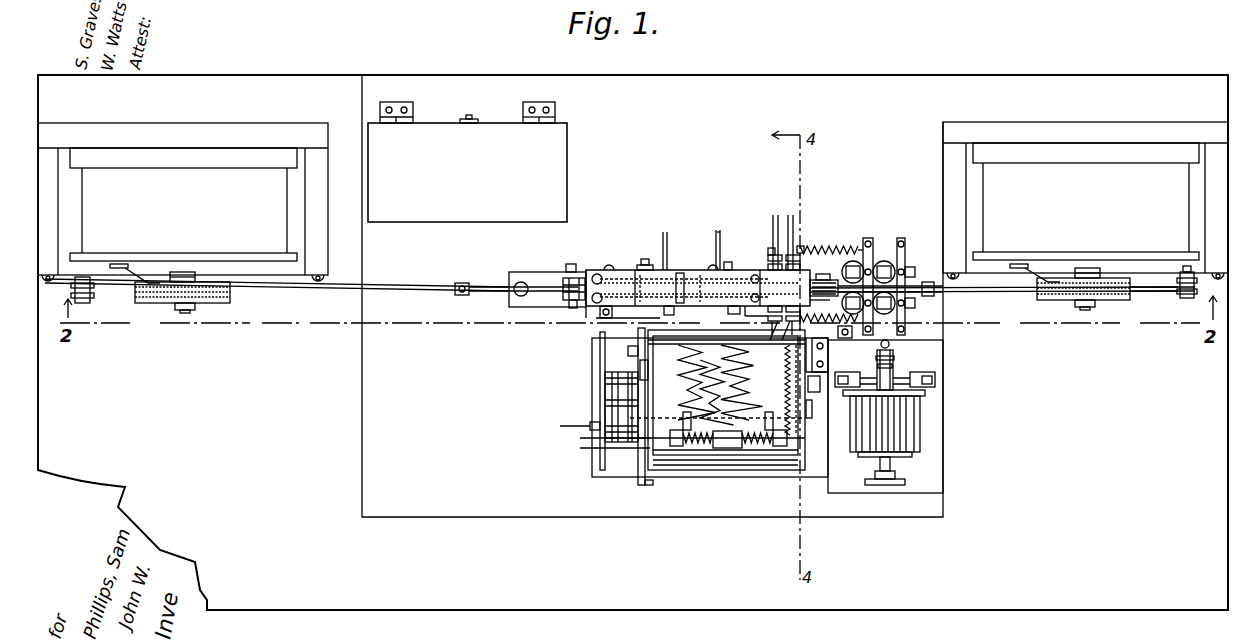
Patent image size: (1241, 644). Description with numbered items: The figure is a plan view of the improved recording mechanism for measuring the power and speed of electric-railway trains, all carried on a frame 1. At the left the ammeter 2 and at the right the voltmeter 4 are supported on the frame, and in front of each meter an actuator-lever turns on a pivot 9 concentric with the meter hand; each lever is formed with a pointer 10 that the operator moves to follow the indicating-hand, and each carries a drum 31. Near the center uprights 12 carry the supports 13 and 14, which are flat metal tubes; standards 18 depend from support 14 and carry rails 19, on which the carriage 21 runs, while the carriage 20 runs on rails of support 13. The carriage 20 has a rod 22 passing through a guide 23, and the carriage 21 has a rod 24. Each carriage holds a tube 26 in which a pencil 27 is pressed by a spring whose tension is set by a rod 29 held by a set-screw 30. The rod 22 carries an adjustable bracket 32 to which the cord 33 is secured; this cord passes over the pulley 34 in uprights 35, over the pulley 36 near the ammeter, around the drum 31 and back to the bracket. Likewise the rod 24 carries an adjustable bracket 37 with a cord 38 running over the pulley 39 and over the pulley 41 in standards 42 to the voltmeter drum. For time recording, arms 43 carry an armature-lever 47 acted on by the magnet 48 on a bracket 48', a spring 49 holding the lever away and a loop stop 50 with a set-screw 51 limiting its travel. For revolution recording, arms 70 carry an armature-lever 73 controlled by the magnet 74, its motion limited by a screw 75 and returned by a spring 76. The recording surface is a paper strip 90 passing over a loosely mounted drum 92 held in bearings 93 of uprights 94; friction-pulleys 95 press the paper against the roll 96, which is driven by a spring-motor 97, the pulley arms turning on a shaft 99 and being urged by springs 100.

The frame 1 is at (633, 342).
The ammeter 2 is at (183, 202).
The voltmeter 4 is at (1085, 200).
The pivot 9 is at (178, 308).
The pointer 10 is at (138, 278).
The uprights 12 is at (609, 266).
The support 13 is at (523, 300).
The support 14 is at (754, 268).
The standards 18 is at (596, 276).
The rails 19 is at (698, 288).
The carriage 20 is at (622, 308).
The carriage 21 is at (684, 276).
The rod 22 is at (500, 292).
The guide 23 is at (523, 282).
The rod 24 is at (763, 288).
The tube 26 is at (780, 252).
The pencil 27 is at (776, 325).
The rod 29 is at (714, 236).
The set-screw 30 is at (805, 242).
The drum 31 is at (212, 303).
The adjustable bracket 32 is at (460, 295).
The wire or cord 33 is at (545, 291).
The pulley 34 is at (562, 282).
The uprights 35 is at (570, 305).
The pulley 36 is at (75, 292).
The adjustable bracket 37 is at (928, 282).
The wire or cord 38 is at (1014, 290).
The pulley 39 is at (835, 284).
The pulley 41 is at (1182, 292).
The standards 42 is at (1190, 298).
The arms 43 is at (743, 314).
The armature-lever 47 is at (829, 311).
The magnet 48 is at (884, 314).
The bracket 48' is at (884, 230).
The spring 49 is at (831, 242).
The stop 50 is at (912, 308).
The set-screw 51 is at (906, 310).
The arms 70 is at (792, 303).
The armature-lever 73 is at (842, 270).
The magnet 74 is at (885, 263).
The screw 75 is at (910, 267).
The spring 76 is at (842, 337).
The paper strip 90 is at (711, 385).
The drum 92 is at (645, 360).
The bearings 93 is at (828, 356).
The uprights 94 is at (628, 352).
The friction-pulleys 95 is at (683, 418).
The roll 96 is at (600, 448).
The spring-motor 97 is at (612, 411).
The shaft 99 is at (710, 407).
The springs 100 is at (700, 448).